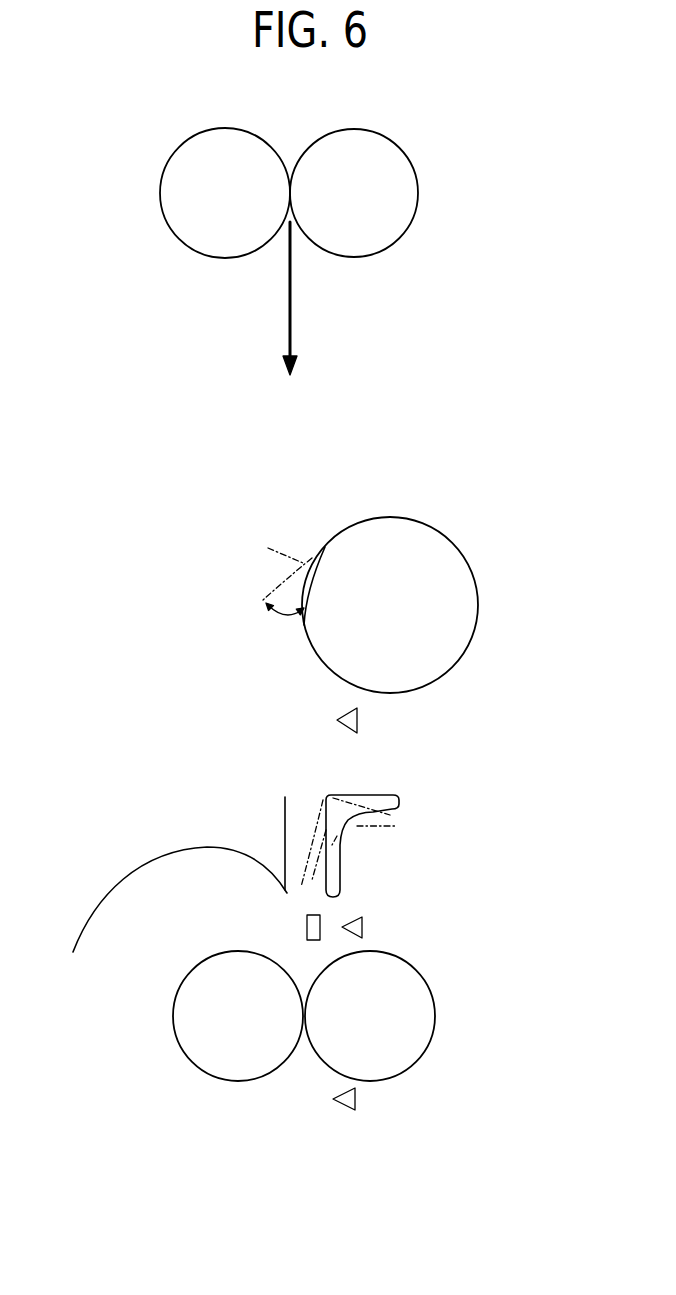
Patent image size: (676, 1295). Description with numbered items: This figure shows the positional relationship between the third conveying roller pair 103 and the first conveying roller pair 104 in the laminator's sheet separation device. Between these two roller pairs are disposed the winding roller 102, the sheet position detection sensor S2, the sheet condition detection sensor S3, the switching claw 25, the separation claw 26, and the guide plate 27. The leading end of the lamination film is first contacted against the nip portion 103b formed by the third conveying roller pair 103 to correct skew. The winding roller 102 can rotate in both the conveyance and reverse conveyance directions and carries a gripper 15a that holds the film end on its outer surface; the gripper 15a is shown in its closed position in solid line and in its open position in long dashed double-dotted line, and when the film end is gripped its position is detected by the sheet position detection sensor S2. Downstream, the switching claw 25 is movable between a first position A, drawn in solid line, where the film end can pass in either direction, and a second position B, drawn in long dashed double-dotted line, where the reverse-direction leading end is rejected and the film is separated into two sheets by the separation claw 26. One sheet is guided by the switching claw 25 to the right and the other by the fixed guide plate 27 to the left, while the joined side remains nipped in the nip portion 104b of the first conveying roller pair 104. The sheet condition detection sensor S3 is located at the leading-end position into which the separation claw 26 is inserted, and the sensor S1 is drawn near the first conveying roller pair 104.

The third conveying roller pair 103 is at (398, 192).
The nip portion 103b is at (288, 150).
The winding roller 102 is at (478, 600).
The gripper 15a is at (313, 592).
The sheet position detection sensor S2 is at (357, 720).
The guide plate 27 is at (203, 847).
The switching claw 25 is at (340, 863).
The second position B is at (318, 822).
The first position A is at (398, 797).
The separation claw 26 is at (305, 928).
The sheet condition detection sensor S3 is at (362, 927).
The first conveying roller pair 104 is at (435, 1012).
The nip portion 104b is at (303, 1058).
The sheet conveyance direction S1 is at (355, 1099).